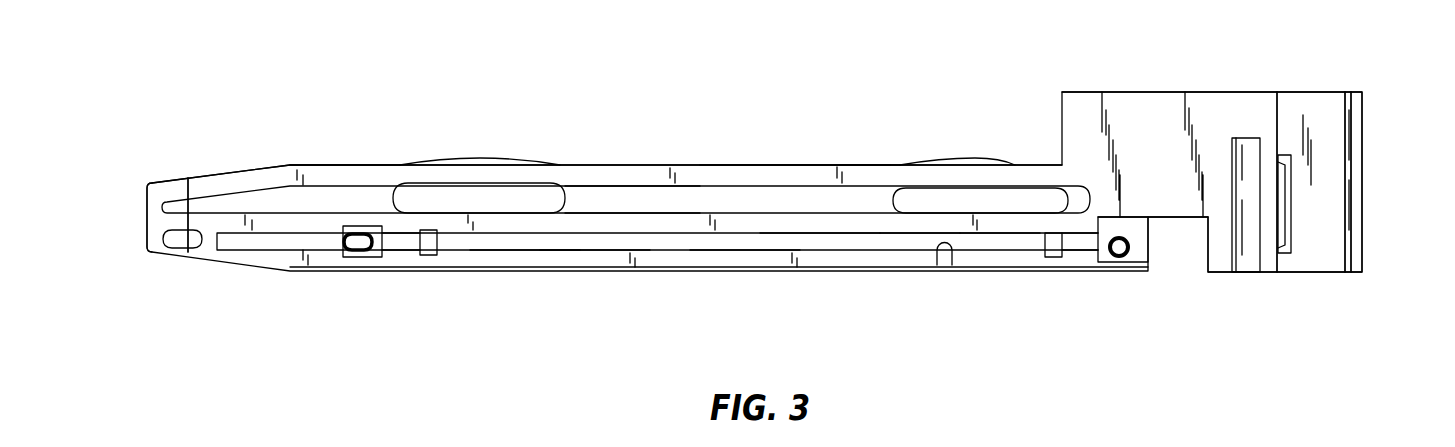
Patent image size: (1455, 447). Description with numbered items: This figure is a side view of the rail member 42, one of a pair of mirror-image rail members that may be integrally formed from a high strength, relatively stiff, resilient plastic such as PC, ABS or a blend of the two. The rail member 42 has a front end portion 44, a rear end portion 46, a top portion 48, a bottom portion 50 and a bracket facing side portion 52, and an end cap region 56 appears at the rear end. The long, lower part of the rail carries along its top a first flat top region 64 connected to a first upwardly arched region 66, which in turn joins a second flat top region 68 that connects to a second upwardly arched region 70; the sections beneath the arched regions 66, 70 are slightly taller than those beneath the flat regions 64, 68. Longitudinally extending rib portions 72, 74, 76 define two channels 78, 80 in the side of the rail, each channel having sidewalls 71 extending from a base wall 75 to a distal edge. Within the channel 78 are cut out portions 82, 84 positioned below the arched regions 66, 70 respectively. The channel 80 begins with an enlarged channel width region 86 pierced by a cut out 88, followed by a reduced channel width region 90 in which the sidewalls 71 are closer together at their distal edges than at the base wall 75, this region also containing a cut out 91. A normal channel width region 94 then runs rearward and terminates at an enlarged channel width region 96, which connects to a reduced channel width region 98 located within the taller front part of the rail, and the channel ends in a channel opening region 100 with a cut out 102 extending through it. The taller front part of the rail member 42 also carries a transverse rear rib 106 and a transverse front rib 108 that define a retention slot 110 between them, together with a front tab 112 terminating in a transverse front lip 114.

The rail member 42 is at (210, 93).
The front end portion 44 is at (1320, 102).
The rear end portion 46 is at (208, 255).
The top portion 48 is at (716, 170).
The bottom portion 50 is at (672, 268).
The bracket facing side portion 52 is at (872, 237).
The end cap 56 is at (176, 222).
The first flat top region 64 is at (318, 165).
The first upwardly arched region 66 is at (440, 162).
The second flat top region 68 is at (799, 168).
The second upwardly arched region 70 is at (942, 162).
The sidewall 71 is at (918, 240).
The rib portion 72 is at (865, 175).
The rib portion 74 is at (819, 225).
The base wall 75 is at (998, 243).
The rib portion 76 is at (746, 250).
The channel 78 is at (620, 205).
The channel 80 is at (592, 250).
The cut out portion 82 is at (494, 193).
The cut out portion 84 is at (1008, 190).
The enlarged channel width region 86 is at (367, 238).
The cut out 88 is at (357, 257).
The reduced channel width region 90 is at (393, 250).
The cut out 91 is at (407, 251).
The normal channel width region 94 is at (524, 250).
The enlarged channel width region 96 is at (1053, 251).
The reduced channel width region 98 is at (1080, 250).
The channel opening region 100 is at (1135, 250).
The cut out 102 is at (1117, 262).
The transverse rear rib 106 is at (1248, 262).
The transverse front rib 108 is at (1292, 205).
The retention slot 110 is at (1272, 145).
The front tab 112 is at (1330, 170).
The transverse front lip 114 is at (1353, 248).